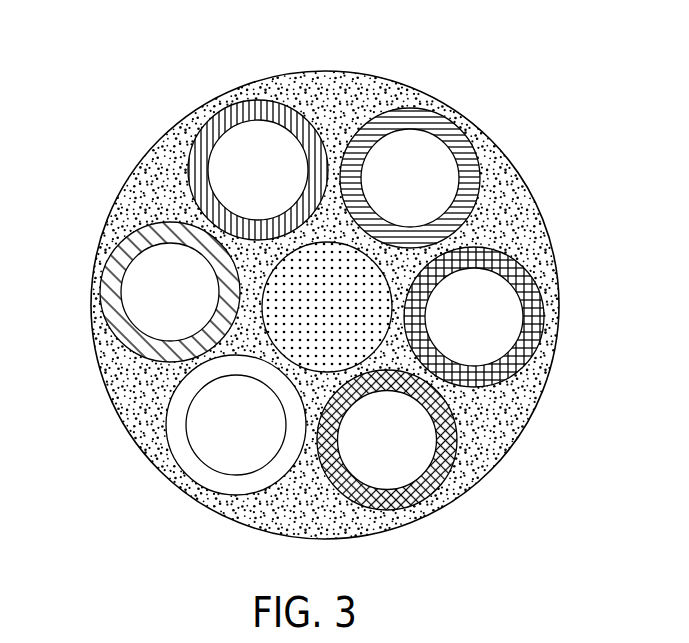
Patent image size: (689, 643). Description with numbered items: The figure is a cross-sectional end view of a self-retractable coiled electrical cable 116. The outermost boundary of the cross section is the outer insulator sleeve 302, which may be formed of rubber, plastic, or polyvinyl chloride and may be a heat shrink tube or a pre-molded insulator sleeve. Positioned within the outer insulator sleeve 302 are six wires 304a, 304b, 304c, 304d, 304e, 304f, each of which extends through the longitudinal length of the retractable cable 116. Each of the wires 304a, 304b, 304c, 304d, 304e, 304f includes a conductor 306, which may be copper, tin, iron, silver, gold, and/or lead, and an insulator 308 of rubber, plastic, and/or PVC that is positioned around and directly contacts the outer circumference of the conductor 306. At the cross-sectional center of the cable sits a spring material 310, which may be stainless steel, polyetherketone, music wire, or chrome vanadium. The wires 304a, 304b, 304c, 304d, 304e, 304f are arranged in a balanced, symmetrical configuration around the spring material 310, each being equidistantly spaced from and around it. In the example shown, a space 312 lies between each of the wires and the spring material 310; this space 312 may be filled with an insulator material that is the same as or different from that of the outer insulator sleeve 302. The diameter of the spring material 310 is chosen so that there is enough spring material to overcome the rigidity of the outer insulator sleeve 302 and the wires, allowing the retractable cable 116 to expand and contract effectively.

The self-retractable coiled electrical cable 116 is at (80, 123).
The outer insulator sleeve 302 is at (522, 406).
The wire 304a is at (463, 130).
The wire 304b is at (545, 317).
The wire 304c is at (413, 507).
The wire 304d is at (240, 360).
The wire 304e is at (205, 495).
The wire 304f is at (220, 110).
The conductor 306 is at (440, 178).
The insulator 308 is at (480, 198).
The spring material 310 is at (290, 318).
The space 312 is at (335, 235).